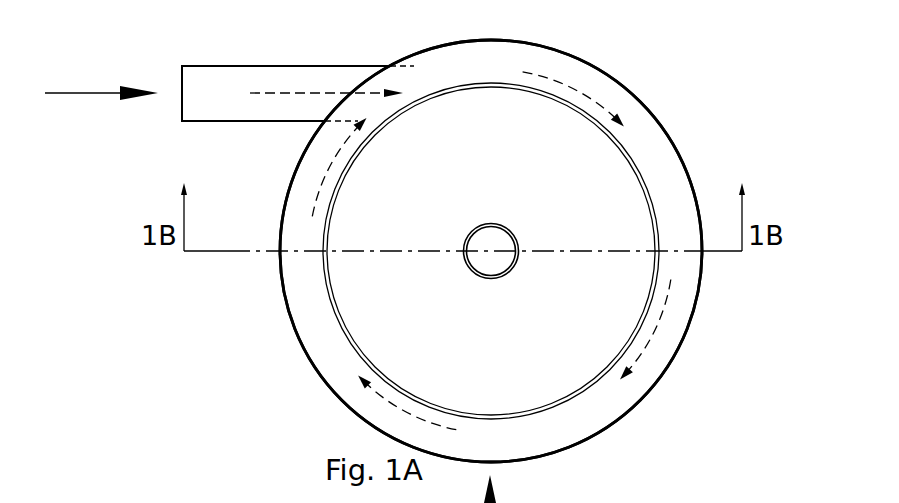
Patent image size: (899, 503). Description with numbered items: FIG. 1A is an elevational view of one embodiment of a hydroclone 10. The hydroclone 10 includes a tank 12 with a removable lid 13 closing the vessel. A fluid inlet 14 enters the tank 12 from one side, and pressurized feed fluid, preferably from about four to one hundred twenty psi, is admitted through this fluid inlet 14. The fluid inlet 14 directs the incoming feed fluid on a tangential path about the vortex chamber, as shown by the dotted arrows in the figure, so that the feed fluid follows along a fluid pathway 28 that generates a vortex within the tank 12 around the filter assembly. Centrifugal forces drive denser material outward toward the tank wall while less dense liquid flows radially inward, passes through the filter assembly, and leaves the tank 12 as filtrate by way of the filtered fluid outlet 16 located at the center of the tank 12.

The hydroclone 10 is at (700, 95).
The tank 12 is at (698, 310).
The removable lid 13 is at (688, 290).
The fluid inlet 14 is at (285, 66).
The filtered fluid outlet 16 is at (507, 275).
The fluid pathway 28 is at (643, 352).